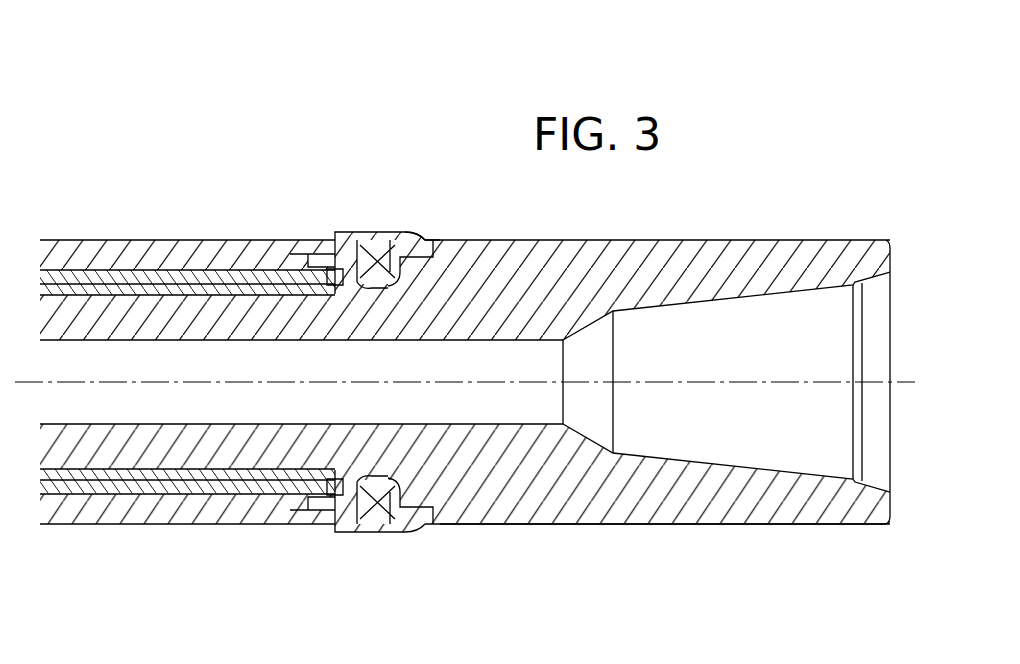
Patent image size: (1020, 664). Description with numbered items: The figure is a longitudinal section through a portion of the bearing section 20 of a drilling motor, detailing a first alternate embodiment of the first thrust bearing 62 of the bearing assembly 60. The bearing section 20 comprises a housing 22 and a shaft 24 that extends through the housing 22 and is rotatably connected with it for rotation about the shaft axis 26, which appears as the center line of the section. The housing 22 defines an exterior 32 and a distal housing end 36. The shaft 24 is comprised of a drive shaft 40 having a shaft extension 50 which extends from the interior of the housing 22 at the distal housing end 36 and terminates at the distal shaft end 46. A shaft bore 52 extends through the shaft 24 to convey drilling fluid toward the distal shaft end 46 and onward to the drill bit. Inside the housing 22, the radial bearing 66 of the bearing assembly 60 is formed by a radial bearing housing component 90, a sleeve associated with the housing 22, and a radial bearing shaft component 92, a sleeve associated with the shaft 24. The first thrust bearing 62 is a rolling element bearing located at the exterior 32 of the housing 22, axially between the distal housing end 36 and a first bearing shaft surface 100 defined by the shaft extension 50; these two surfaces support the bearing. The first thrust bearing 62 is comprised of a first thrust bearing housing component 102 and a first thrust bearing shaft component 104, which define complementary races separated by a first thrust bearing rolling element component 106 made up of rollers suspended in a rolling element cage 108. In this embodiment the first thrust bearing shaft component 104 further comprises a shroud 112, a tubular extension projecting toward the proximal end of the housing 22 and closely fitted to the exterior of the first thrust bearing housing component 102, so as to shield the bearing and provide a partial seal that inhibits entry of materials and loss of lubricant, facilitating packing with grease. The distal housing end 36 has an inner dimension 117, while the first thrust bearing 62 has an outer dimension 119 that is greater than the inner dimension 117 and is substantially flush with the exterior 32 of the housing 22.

The bearing section 20 is at (110, 165).
The housing 22 is at (48, 525).
The shaft 24 is at (577, 240).
The shaft axis 26 is at (740, 390).
The exterior 32 is at (211, 225).
The distal housing end 36 is at (308, 235).
The drive shaft 40 is at (681, 240).
The distal shaft end 46 is at (886, 240).
The shaft extension 50 is at (600, 525).
The shaft bore 52 is at (265, 370).
The bearing assembly 60 is at (250, 155).
The first thrust bearing 62 is at (380, 140).
The radial bearing 66 is at (103, 525).
The radial bearing housing component 90 is at (240, 525).
The radial bearing shaft component 92 is at (170, 525).
The first bearing shaft surface 100 is at (425, 530).
The first thrust bearing housing component 102 is at (325, 240).
The first thrust bearing shaft component 104 is at (435, 240).
The first thrust bearing rolling element component 106 is at (393, 235).
The rolling element cage 108 is at (368, 530).
The shroud 112 is at (365, 230).
The inner dimension 117 is at (338, 535).
The outer dimension 119 is at (323, 532).